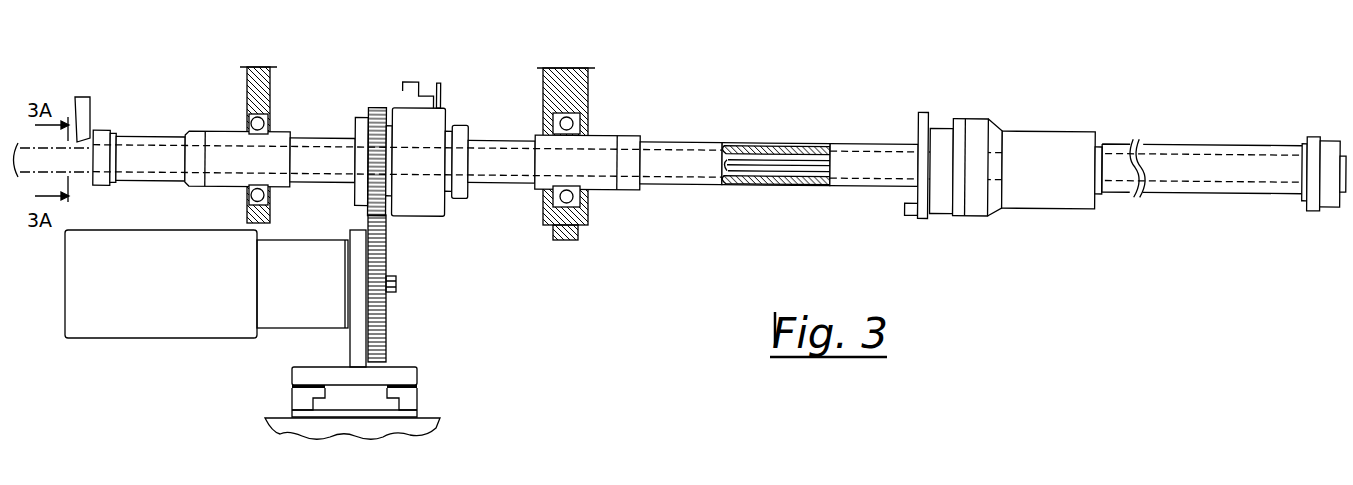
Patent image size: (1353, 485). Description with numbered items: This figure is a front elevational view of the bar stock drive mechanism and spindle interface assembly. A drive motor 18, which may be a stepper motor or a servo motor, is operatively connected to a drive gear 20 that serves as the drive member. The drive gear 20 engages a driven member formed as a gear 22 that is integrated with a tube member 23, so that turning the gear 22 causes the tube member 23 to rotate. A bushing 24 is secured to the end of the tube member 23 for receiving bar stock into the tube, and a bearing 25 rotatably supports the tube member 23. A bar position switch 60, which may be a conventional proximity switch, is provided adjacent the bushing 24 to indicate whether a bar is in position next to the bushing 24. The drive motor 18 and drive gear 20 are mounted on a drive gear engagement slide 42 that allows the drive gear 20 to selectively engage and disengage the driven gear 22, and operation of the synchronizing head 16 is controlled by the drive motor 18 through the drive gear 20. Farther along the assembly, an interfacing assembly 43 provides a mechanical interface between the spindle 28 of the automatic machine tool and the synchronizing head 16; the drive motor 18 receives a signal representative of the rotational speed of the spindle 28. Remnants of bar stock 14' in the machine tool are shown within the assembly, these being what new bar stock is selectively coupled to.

The bar position switch 60 is at (92, 112).
The bearing 25 is at (247, 127).
The bushing 24 is at (103, 188).
The drive motor 18 is at (137, 313).
The tube member 23 is at (327, 138).
The gear 22 is at (377, 107).
The synchronizing head 16 is at (451, 114).
The remnants of bar stock 14' is at (776, 123).
The interfacing assembly 43 is at (868, 158).
The spindle 28 is at (1215, 152).
The drive gear 20 is at (377, 327).
The drive gear engagement slide 42 is at (377, 402).